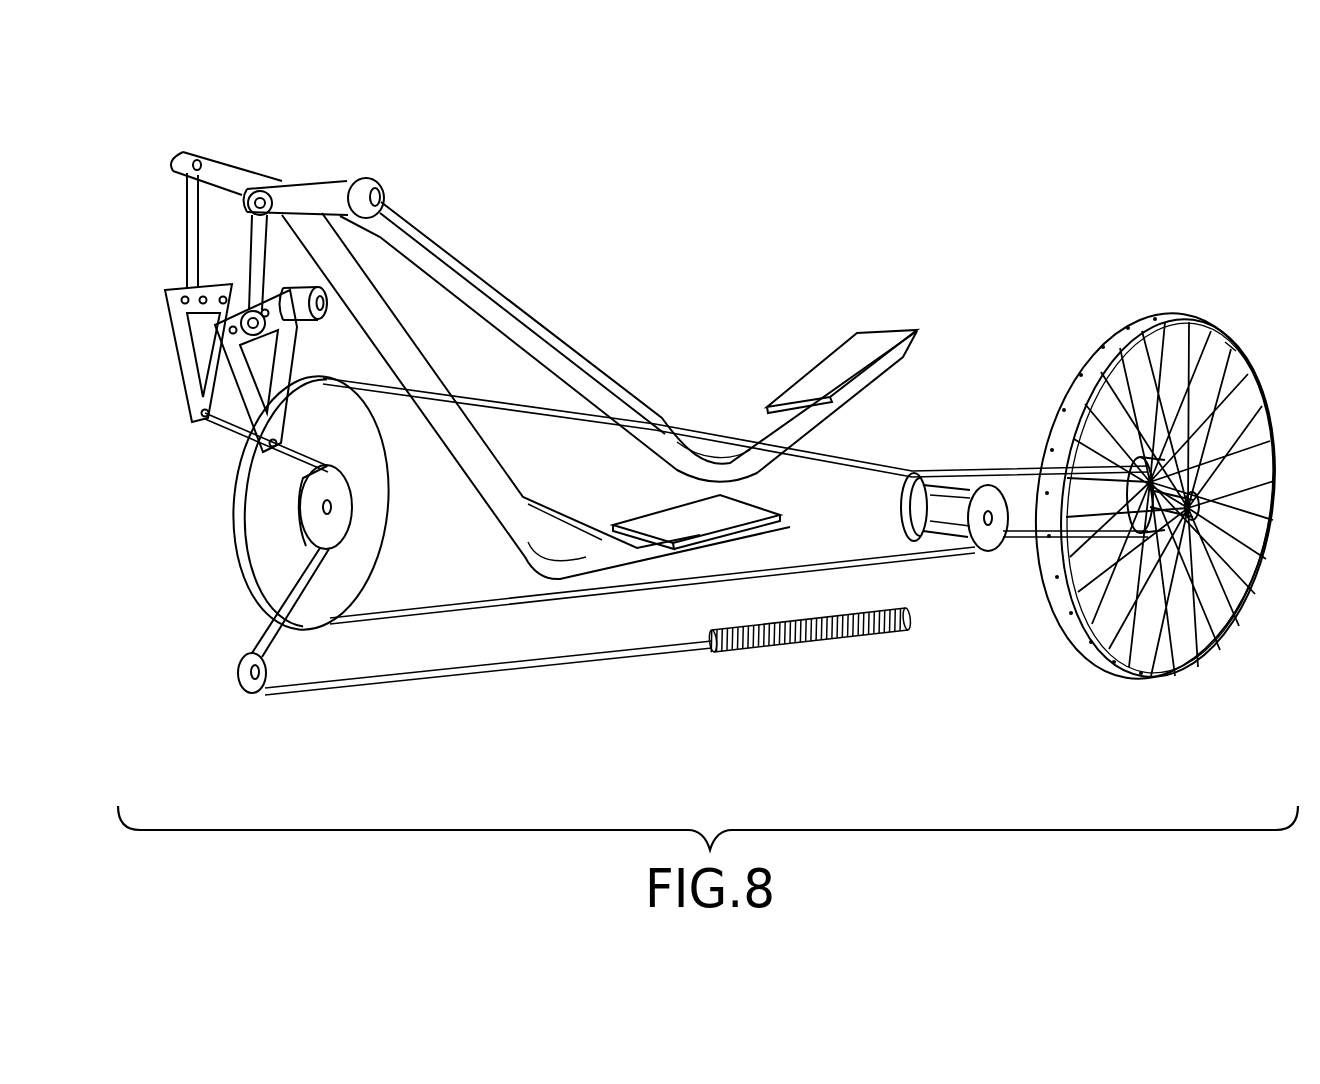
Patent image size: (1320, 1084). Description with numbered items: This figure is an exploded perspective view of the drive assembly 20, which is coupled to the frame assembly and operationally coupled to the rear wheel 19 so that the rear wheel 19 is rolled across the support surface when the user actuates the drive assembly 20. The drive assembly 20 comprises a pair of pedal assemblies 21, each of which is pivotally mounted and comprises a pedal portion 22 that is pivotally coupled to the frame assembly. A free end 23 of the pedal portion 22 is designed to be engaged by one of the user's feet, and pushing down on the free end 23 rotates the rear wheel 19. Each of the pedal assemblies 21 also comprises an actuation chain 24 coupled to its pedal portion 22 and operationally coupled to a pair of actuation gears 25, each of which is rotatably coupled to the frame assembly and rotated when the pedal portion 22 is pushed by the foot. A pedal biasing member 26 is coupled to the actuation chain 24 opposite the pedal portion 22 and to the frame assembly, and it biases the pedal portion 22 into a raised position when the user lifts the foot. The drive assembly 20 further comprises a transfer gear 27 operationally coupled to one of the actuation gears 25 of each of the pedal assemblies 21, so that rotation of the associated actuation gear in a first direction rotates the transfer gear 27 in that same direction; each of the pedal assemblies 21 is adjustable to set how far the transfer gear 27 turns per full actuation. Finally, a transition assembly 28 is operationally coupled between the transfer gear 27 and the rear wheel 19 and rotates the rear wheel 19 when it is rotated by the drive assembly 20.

The rear wheel 19 is at (1078, 652).
The drive assembly 20 is at (229, 623).
The pedal assemblies 21 is at (507, 252).
The pedal portion 22 is at (552, 338).
The free end 23 is at (820, 383).
The actuation chain 24 is at (248, 430).
The actuation gears 25 is at (317, 522).
The pedal biasing member 26 is at (756, 644).
The transfer gear 27 is at (250, 560).
The transition assembly 28 is at (959, 580).